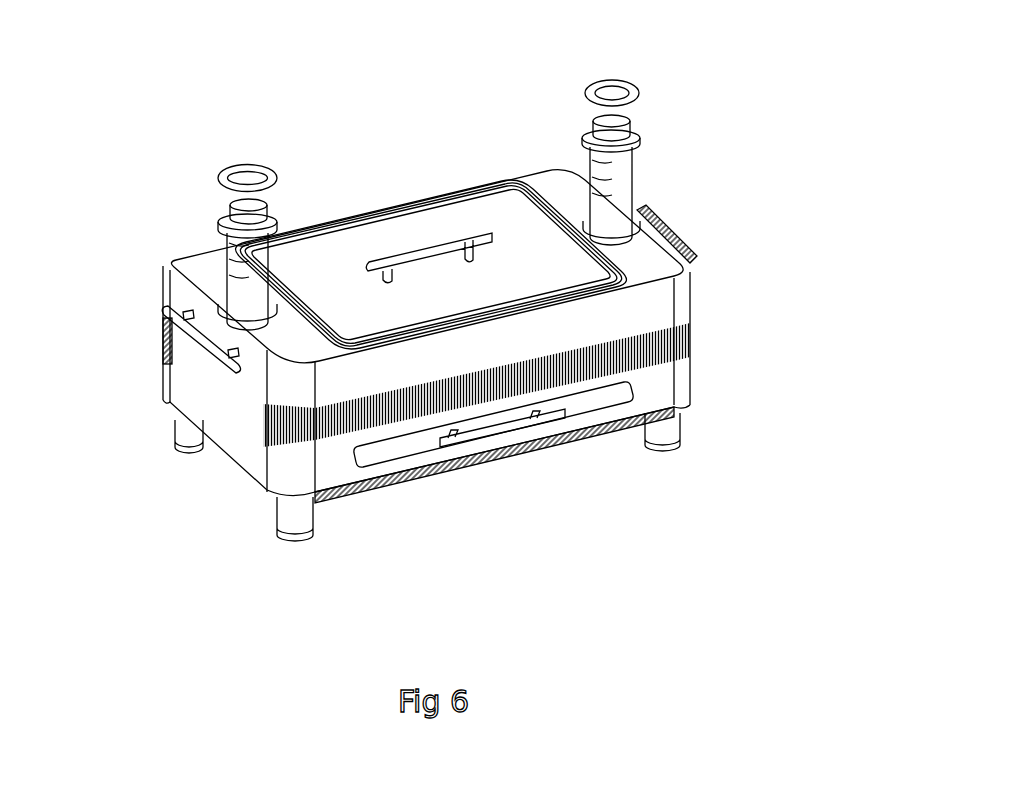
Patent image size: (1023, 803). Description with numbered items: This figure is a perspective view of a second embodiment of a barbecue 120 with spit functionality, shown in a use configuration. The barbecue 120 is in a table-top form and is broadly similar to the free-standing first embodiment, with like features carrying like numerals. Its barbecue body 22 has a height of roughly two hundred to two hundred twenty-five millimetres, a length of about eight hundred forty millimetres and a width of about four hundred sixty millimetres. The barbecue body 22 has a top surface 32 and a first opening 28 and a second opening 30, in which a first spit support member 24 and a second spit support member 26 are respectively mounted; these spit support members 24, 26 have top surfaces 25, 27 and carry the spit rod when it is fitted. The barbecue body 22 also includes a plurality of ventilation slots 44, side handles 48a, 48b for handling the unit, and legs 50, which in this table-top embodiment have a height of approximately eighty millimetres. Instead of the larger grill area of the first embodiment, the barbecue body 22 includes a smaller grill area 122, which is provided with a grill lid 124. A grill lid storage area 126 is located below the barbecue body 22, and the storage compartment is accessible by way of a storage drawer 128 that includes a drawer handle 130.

The barbecue 120 is at (822, 117).
The barbecue body 22 is at (658, 303).
The first spit support member 24 is at (233, 260).
The top surface 25 is at (242, 207).
The second spit support member 26 is at (625, 180).
The top surface 27 is at (625, 122).
The first opening 28 is at (167, 298).
The second opening 30 is at (650, 218).
The top surface 32 is at (203, 392).
The ventilation slots 44 is at (690, 342).
The side handle 48a is at (163, 345).
The side handle 48b is at (677, 236).
The legs 50 is at (177, 434).
The grill area 122 is at (447, 195).
The grill lid 124 is at (348, 247).
The grill lid storage area 126 is at (572, 450).
The storage drawer 128 is at (412, 445).
The drawer handle 130 is at (510, 433).